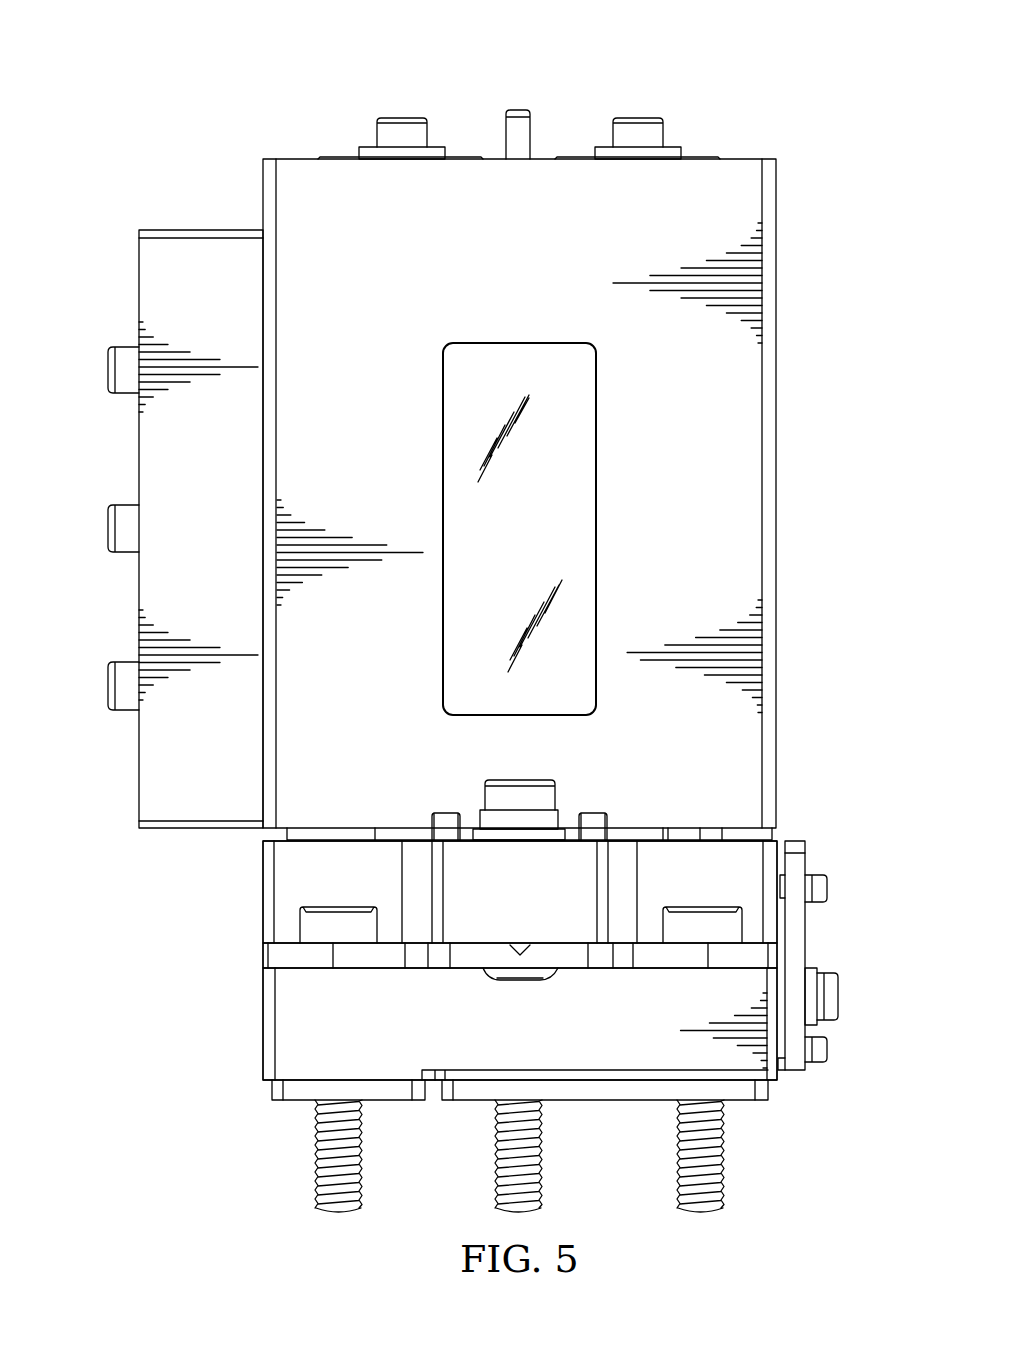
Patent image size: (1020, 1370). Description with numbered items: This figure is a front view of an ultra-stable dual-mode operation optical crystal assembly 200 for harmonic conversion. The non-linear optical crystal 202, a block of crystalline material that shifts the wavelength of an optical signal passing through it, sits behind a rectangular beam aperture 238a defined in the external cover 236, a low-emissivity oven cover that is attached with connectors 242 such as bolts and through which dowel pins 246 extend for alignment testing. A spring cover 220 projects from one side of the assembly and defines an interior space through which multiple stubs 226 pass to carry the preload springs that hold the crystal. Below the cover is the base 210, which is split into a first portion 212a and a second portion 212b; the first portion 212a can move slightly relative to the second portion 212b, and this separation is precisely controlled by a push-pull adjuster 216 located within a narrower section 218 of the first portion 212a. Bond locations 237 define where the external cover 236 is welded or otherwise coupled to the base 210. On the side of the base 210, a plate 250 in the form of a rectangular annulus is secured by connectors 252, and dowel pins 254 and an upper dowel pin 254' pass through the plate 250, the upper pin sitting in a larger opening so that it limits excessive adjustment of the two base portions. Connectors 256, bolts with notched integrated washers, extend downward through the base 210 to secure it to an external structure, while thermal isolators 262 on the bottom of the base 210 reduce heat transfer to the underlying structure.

The optical crystal assembly 200 is at (246, 74).
The non-linear optical crystal 202 is at (570, 489).
The base 210 is at (178, 1009).
The first portion of the base 212a is at (287, 883).
The second portion of the base 212b is at (287, 1040).
The push-pull adjuster 216 is at (485, 796).
The narrower section 218 is at (467, 890).
The spring cover 220 is at (139, 295).
The stubs 226 is at (108, 530).
The external cover 236 is at (777, 262).
The bond locations 237 is at (593, 813).
The beam aperture 238a is at (535, 343).
The connectors 242 is at (636, 118).
The dowel pins 246 is at (518, 110).
The plate 250 is at (808, 930).
The connectors 252 is at (840, 998).
The lower dowel pins 254 is at (856, 1056).
The upper dowel pin 254' is at (860, 895).
The connectors 256 is at (337, 1212).
The thermal isolators 262 is at (272, 1090).